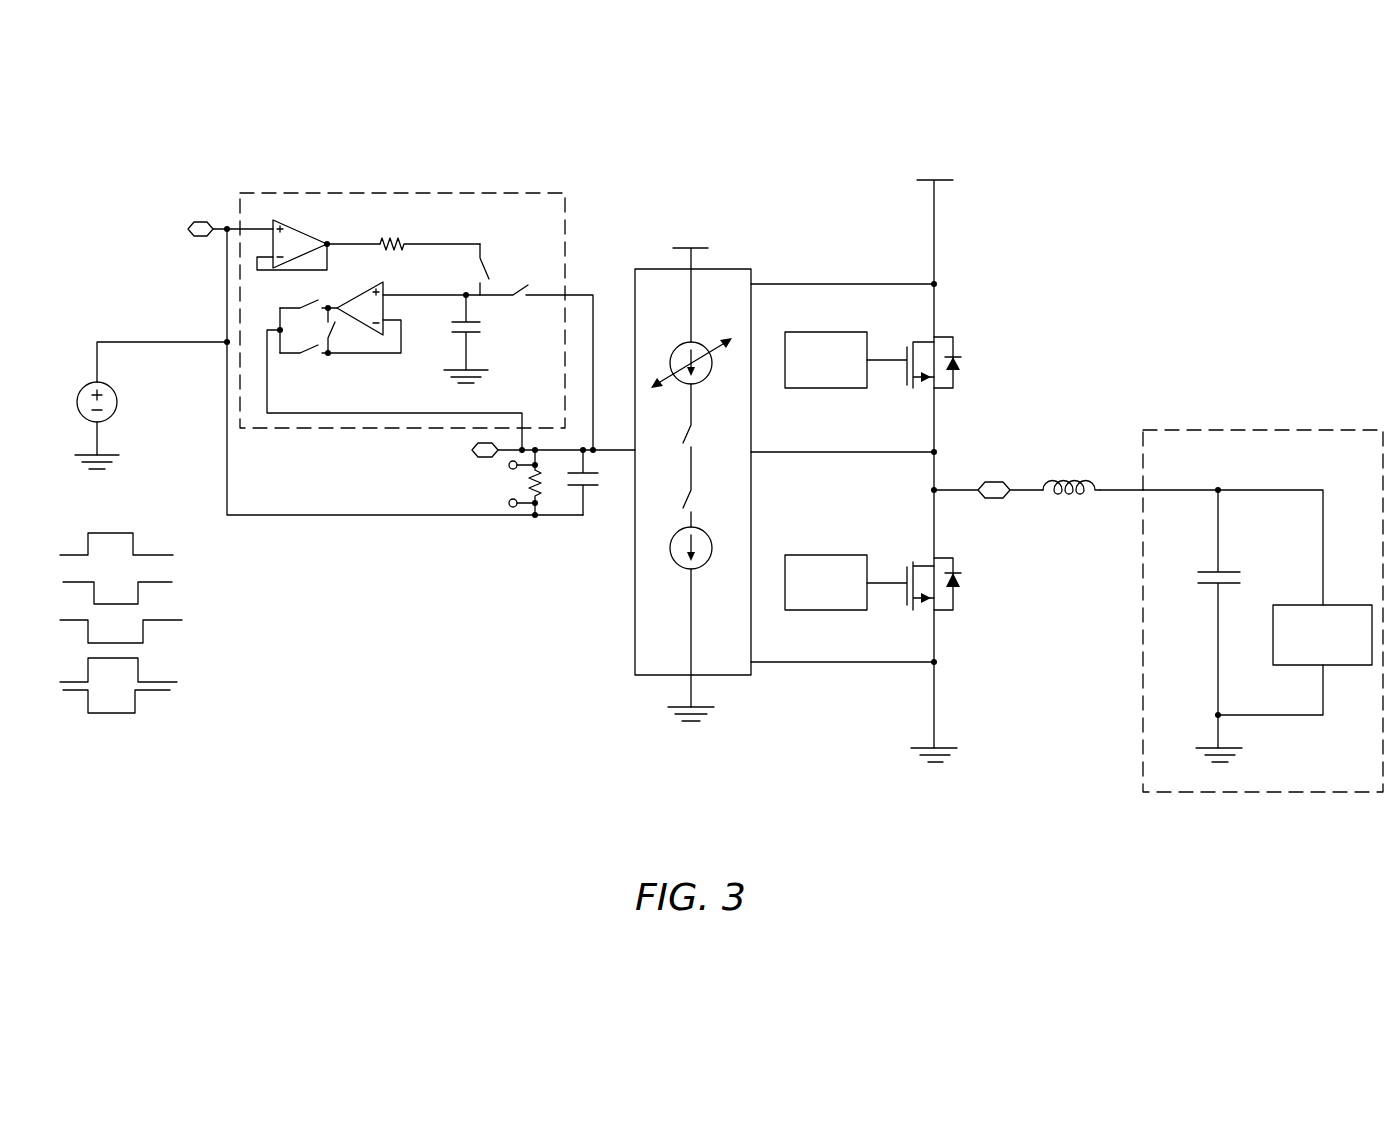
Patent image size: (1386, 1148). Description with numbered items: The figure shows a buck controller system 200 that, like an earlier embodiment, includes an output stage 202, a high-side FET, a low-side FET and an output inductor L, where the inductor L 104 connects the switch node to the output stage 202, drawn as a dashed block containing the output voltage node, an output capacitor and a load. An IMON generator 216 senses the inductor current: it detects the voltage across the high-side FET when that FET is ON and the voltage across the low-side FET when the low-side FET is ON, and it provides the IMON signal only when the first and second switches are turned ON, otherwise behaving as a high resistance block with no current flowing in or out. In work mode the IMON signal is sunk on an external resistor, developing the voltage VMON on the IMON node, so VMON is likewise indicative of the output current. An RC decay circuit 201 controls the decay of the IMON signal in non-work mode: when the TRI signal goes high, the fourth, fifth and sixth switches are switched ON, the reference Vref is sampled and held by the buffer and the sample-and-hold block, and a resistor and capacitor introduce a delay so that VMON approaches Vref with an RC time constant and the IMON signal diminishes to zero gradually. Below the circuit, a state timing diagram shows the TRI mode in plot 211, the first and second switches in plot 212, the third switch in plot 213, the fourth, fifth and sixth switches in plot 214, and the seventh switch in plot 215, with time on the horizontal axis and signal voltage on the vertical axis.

The buck controller system 200 is at (182, 134).
The RC decay circuit 201 is at (476, 193).
The output stage 202 is at (1212, 430).
The IMON generator 216 is at (751, 269).
The plot of TRI mode 211 is at (173, 555).
The plot of switches S1 and S2 212 is at (172, 582).
The plot of switch S3 213 is at (188, 608).
The plot of switches S4, S5, and S6 214 is at (177, 682).
The plot of switch S7 215 is at (170, 690).
The inductor 104 is at (1057, 494).